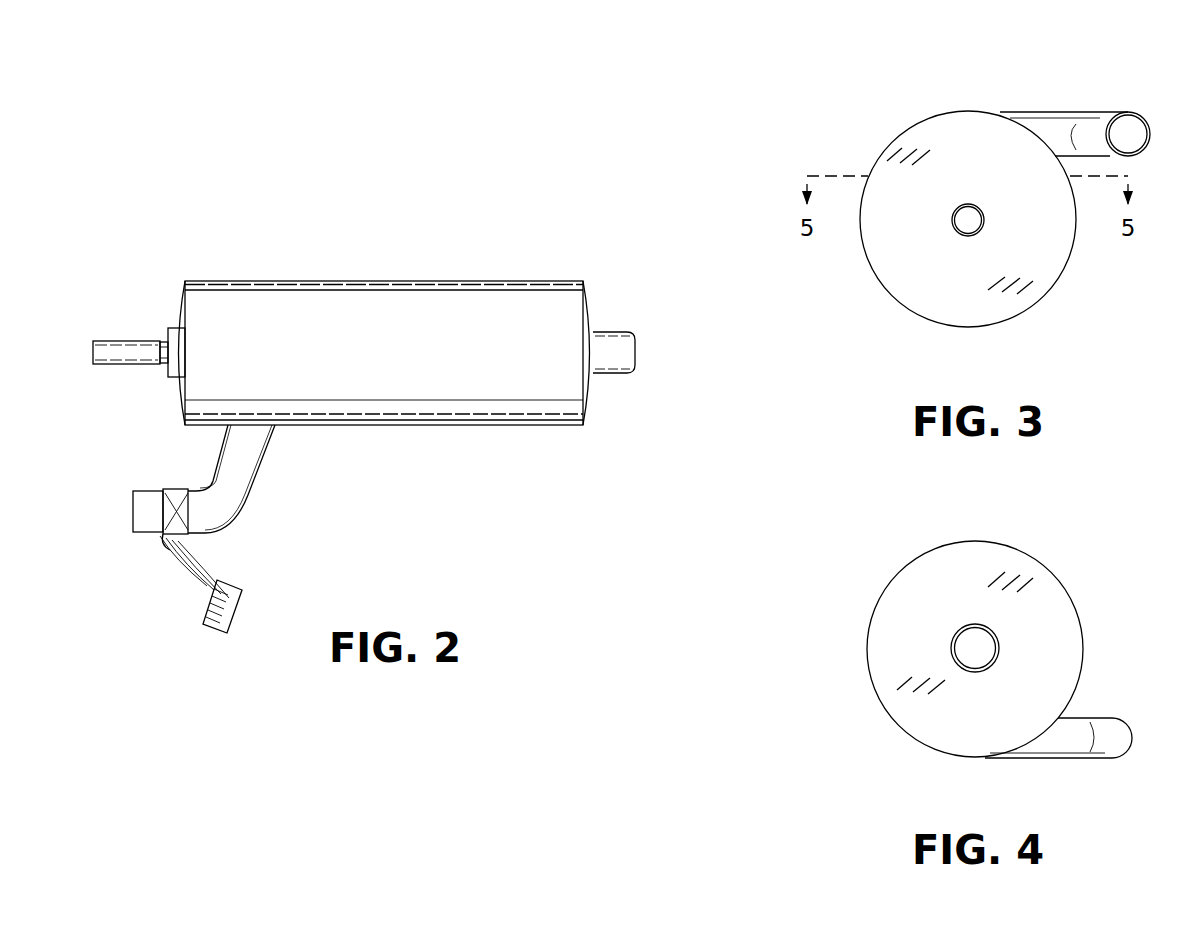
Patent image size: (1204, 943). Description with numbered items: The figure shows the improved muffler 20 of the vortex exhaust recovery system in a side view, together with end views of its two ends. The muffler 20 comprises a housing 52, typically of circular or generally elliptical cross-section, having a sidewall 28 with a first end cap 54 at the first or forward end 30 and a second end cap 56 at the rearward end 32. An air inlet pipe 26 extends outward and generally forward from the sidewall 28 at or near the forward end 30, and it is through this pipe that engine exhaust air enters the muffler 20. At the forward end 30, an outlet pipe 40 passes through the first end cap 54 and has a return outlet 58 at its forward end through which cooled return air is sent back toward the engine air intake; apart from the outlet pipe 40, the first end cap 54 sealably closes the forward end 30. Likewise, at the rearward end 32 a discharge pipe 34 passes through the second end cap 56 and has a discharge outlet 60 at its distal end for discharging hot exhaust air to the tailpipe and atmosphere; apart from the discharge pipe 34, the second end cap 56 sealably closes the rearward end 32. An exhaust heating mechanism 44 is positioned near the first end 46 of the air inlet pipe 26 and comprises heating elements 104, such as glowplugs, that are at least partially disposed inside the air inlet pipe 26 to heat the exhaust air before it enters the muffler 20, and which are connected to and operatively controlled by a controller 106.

In FIG. 2, the muffler 20 is at (490, 212).
In FIG. 3, the muffler 20 is at (852, 116).
In FIG. 4, the muffler 20 is at (1090, 562).
In FIG. 2, the air inlet pipe 26 is at (250, 455).
In FIG. 3, the air inlet pipe 26 is at (1045, 118).
In FIG. 4, the air inlet pipe 26 is at (1075, 728).
In FIG. 2, the sidewall 28 is at (445, 385).
In FIG. 3, the sidewall 28 is at (917, 117).
In FIG. 4, the sidewall 28 is at (1036, 550).
In FIG. 2, the first end 30 is at (187, 272).
In FIG. 3, the first end 30 is at (1060, 310).
In FIG. 2, the rearward end 32 is at (580, 437).
In FIG. 4, the rearward end 32 is at (866, 587).
In FIG. 2, the discharge pipe 34 is at (612, 345).
In FIG. 4, the discharge pipe 34 is at (975, 673).
In FIG. 2, the outlet pipe 40 is at (120, 350).
In FIG. 3, the outlet pipe 40 is at (965, 236).
In FIG. 2, the exhaust heating mechanism 44 is at (247, 567).
In FIG. 2, the first end of air inlet pipe 46 is at (128, 511).
In FIG. 3, the first end of air inlet pipe 46 is at (1137, 114).
In FIG. 2, the housing 52 is at (243, 330).
In FIG. 3, the housing 52 is at (1072, 262).
In FIG. 4, the housing 52 is at (972, 540).
In FIG. 2, the first end cap 54 is at (180, 383).
In FIG. 3, the first end cap 54 is at (896, 255).
In FIG. 2, the second end cap 56 is at (588, 385).
In FIG. 4, the second end cap 56 is at (893, 672).
In FIG. 2, the return outlet 58 is at (78, 353).
In FIG. 3, the return outlet 58 is at (968, 210).
In FIG. 2, the discharge outlet 60 is at (654, 349).
In FIG. 4, the discharge outlet 60 is at (970, 644).
In FIG. 2, the heating elements 104 is at (178, 498).
In FIG. 2, the controller 106 is at (235, 620).